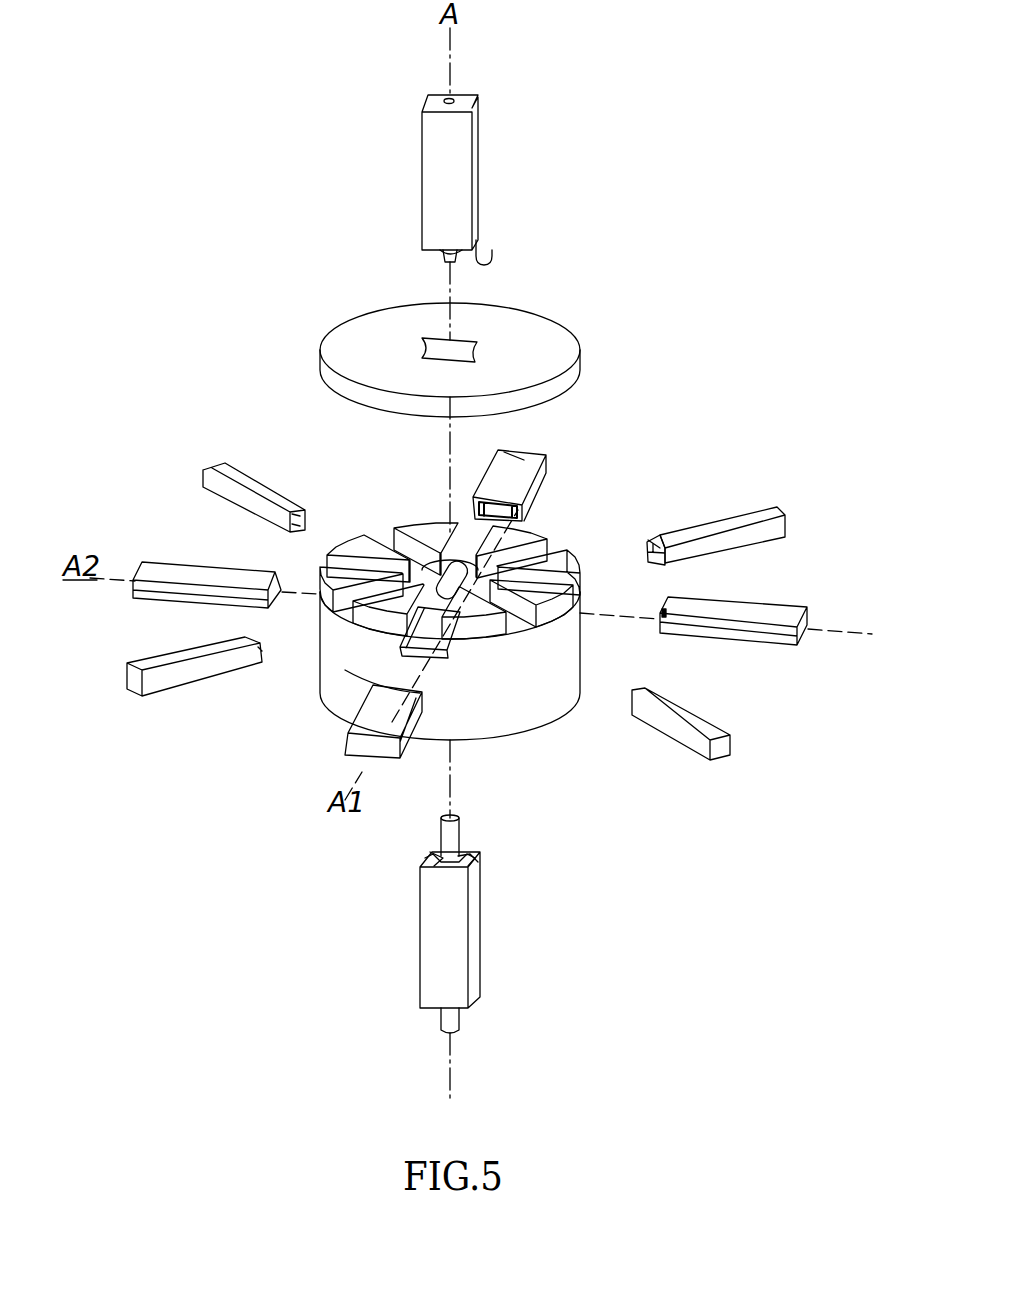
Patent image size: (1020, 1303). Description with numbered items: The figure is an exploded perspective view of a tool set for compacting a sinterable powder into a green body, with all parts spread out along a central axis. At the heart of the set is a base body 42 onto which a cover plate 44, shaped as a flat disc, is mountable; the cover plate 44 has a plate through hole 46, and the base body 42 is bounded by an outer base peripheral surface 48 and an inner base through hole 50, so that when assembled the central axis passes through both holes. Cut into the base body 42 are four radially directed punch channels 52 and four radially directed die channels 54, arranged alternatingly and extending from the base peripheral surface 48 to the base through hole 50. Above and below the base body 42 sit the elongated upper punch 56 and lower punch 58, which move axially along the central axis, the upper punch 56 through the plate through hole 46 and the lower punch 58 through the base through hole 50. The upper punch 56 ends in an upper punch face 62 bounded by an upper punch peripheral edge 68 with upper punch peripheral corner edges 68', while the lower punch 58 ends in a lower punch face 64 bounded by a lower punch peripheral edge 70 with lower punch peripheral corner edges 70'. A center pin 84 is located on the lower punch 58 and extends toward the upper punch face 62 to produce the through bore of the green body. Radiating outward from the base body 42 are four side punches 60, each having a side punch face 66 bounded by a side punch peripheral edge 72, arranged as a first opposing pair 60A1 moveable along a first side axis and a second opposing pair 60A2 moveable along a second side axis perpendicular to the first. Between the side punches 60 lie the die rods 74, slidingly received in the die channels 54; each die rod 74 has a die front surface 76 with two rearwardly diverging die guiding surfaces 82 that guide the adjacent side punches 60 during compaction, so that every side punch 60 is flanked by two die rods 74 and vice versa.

The base body 42 is at (550, 660).
The cover plate 44 is at (535, 336).
The plate through hole 46 is at (462, 350).
The base peripheral surface 48 is at (325, 665).
The base through hole 50 is at (435, 580).
The punch channels 52 is at (465, 576).
The die channels 54 is at (520, 648).
The upper punch 56 is at (435, 165).
The lower punch 58 is at (428, 940).
The side punches 60 is at (375, 715).
The first opposing pair of side punches 60A1 is at (372, 745).
The second opposing pair of side punches 60A2 is at (175, 568).
The upper punch face 62 is at (444, 255).
The lower punch face 64 is at (478, 847).
The side punch face 66 is at (493, 512).
The upper punch peripheral edge 68 is at (404, 278).
The upper punch peripheral corner edges 68' is at (514, 241).
The lower punch peripheral edge 70 is at (396, 844).
The lower punch peripheral corner edges 70' is at (526, 874).
The side punch peripheral edge 72 is at (548, 470).
The die rods 74 is at (720, 522).
The die front surface 76 is at (645, 550).
The die guiding surfaces 82 is at (296, 512).
The center pin 84 is at (452, 838).